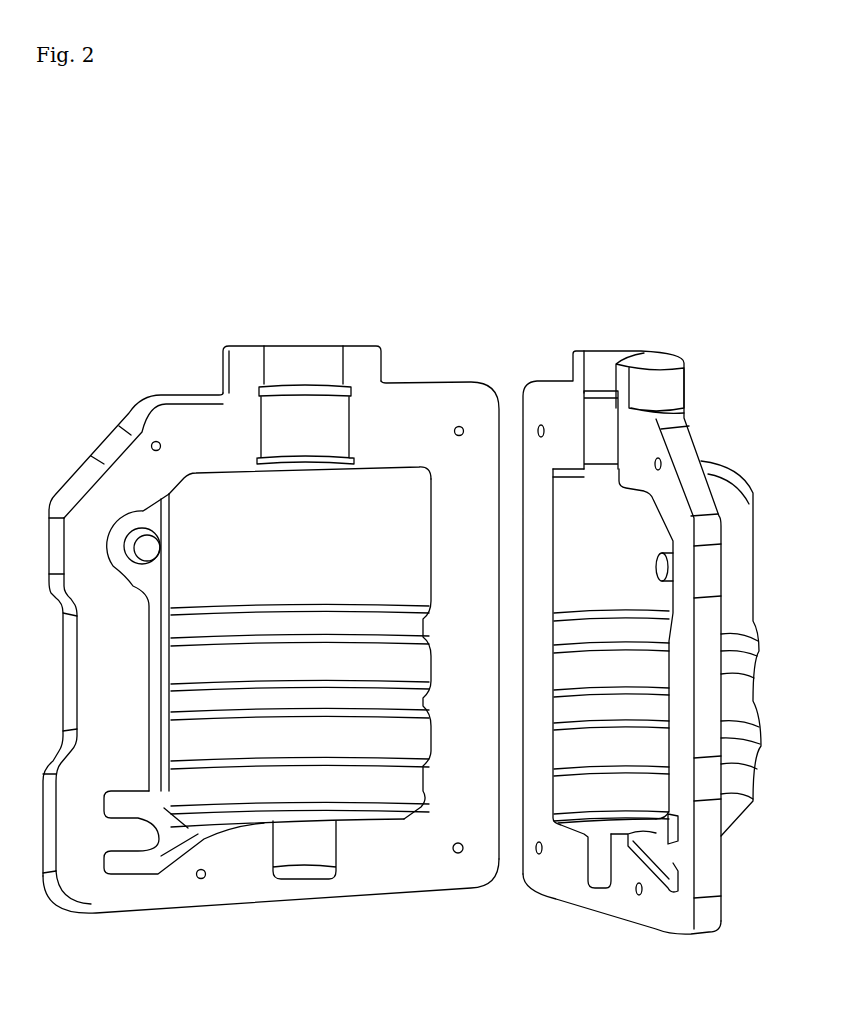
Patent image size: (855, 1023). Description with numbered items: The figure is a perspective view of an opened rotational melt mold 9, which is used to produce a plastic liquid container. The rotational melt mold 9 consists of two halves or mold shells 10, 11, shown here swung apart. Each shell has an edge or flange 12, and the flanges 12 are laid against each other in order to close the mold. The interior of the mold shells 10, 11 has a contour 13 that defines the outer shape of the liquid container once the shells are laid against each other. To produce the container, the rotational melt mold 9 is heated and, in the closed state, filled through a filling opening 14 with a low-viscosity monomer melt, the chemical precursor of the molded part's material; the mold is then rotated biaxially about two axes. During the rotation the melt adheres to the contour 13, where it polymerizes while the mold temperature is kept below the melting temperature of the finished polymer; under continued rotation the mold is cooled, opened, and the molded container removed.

The rotational melt mold 9 is at (611, 259).
The mold shell 10 is at (412, 376).
The mold shell 11 is at (685, 437).
The flange 12 is at (393, 870).
The contour 13 is at (233, 527).
The filling opening 14 is at (325, 313).